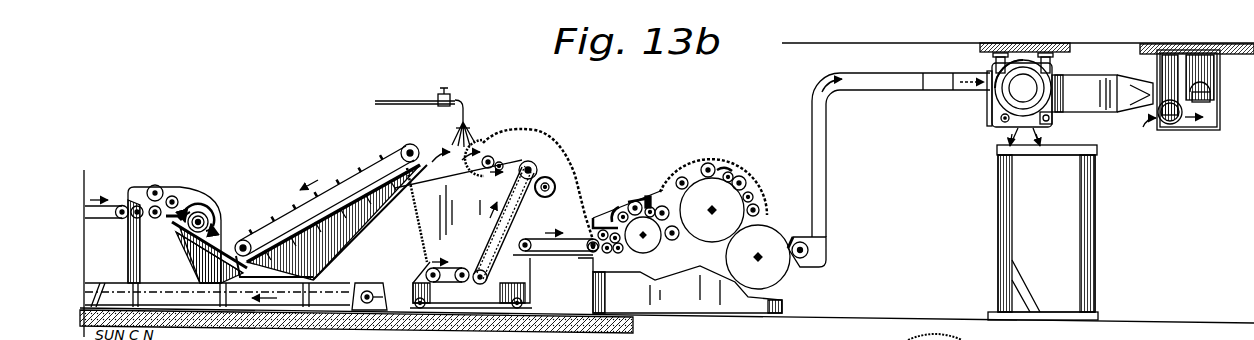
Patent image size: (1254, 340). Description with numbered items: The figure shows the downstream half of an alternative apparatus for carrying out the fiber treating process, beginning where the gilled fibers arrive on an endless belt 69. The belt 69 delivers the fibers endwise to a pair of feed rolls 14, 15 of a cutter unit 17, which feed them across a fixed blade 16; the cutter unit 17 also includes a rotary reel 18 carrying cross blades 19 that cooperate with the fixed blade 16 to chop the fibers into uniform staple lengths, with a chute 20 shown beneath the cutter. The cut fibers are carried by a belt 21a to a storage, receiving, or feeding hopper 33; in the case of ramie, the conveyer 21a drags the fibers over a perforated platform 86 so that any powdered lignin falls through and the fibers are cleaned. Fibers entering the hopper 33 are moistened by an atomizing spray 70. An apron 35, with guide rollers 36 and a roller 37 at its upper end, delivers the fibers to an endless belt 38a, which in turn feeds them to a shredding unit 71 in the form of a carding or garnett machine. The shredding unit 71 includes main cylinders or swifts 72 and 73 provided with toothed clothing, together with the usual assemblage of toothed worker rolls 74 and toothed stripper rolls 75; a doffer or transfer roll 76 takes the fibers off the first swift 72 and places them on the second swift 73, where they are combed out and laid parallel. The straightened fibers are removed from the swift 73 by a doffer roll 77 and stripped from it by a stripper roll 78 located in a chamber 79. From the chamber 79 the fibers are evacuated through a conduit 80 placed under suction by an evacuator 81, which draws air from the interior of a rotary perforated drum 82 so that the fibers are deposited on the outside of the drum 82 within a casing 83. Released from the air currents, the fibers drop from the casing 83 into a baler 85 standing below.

The feed roll 14 is at (172, 196).
The feed roll 15 is at (156, 218).
The fixed blade 16 is at (178, 226).
The cutter unit 17 is at (214, 207).
The rotary reel 18 is at (210, 218).
The cross blades 19 is at (189, 207).
The chute 20 is at (206, 254).
The belt 21a is at (343, 172).
The hopper 33 is at (472, 212).
The apron 35 is at (487, 240).
The guide rollers 36 is at (500, 162).
The roller 37 is at (557, 184).
The endless belt 38a is at (577, 250).
The endless belt 69 is at (122, 204).
The atomizing spray 70 is at (468, 126).
The shredding unit 71 is at (730, 158).
The main cylinder 72 is at (651, 252).
The main cylinder 73 is at (720, 233).
The worker rolls 74 is at (639, 200).
The stripper rolls 75 is at (619, 204).
The doffer roll 76 is at (676, 240).
The doffer roll 77 is at (767, 280).
The stripper roll 78 is at (822, 254).
The chamber 79 is at (812, 263).
The conduit 80 is at (826, 188).
The evacuator 81 is at (1170, 76).
The rotary perforated drum 82 is at (996, 108).
The casing 83 is at (999, 73).
The baler 85 is at (1047, 231).
The perforated platform 86 is at (322, 232).